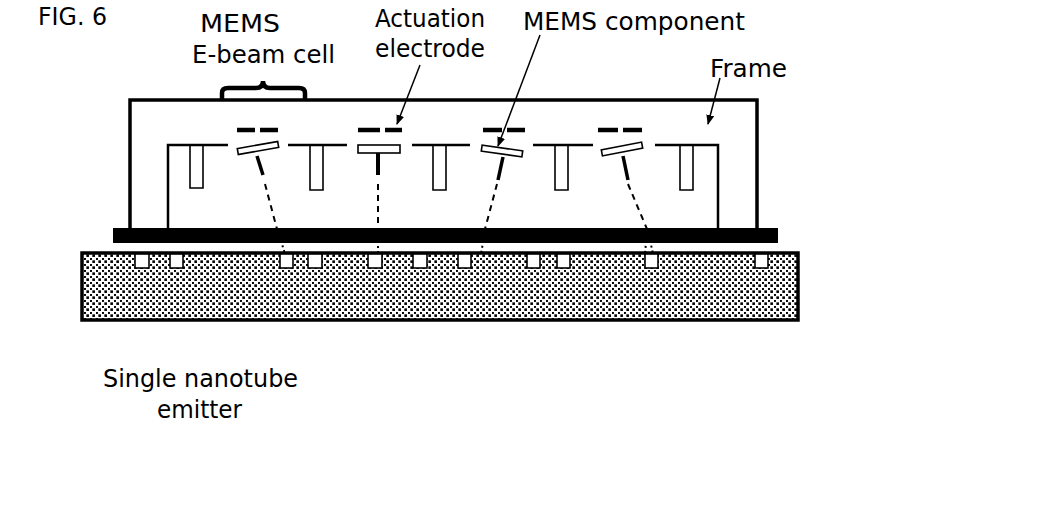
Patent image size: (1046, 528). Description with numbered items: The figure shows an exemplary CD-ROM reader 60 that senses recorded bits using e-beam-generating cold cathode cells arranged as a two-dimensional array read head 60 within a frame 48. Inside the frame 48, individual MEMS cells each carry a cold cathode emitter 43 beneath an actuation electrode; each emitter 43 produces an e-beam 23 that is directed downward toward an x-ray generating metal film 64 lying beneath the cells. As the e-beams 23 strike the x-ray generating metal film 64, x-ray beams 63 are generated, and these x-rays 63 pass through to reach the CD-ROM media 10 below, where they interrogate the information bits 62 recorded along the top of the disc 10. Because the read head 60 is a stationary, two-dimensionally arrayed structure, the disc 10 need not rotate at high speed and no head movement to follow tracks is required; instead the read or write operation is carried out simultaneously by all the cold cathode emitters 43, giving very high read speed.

The CD-ROM reader 60 is at (112, 150).
The frame 48 is at (461, 128).
The e-beam 23 is at (501, 207).
The cold cathode emitter 43 is at (262, 170).
The CD-ROM media 10 is at (333, 297).
The information bit 62 is at (420, 265).
The x-ray beam 63 is at (643, 258).
The x-ray generating metal film 64 is at (683, 243).